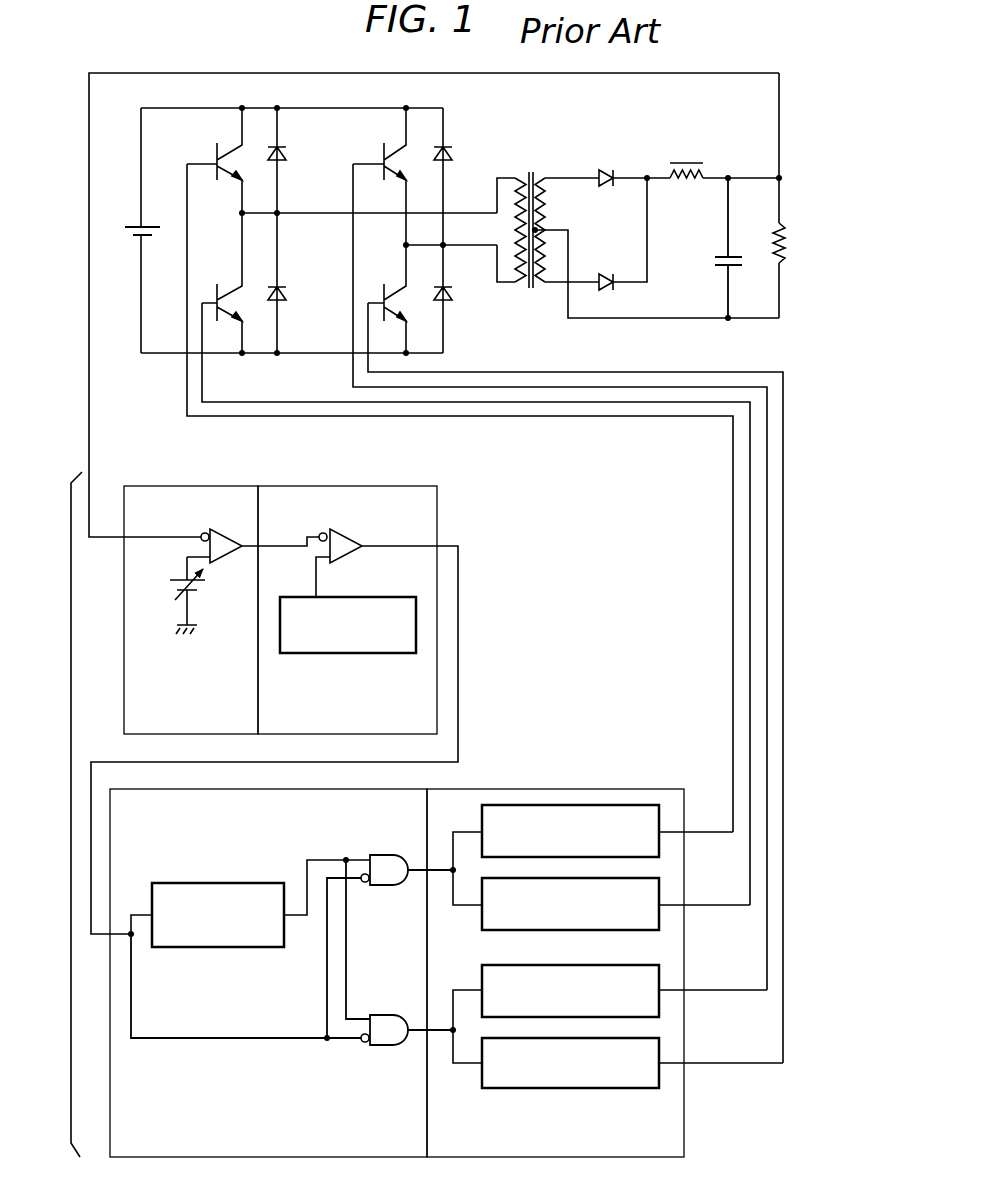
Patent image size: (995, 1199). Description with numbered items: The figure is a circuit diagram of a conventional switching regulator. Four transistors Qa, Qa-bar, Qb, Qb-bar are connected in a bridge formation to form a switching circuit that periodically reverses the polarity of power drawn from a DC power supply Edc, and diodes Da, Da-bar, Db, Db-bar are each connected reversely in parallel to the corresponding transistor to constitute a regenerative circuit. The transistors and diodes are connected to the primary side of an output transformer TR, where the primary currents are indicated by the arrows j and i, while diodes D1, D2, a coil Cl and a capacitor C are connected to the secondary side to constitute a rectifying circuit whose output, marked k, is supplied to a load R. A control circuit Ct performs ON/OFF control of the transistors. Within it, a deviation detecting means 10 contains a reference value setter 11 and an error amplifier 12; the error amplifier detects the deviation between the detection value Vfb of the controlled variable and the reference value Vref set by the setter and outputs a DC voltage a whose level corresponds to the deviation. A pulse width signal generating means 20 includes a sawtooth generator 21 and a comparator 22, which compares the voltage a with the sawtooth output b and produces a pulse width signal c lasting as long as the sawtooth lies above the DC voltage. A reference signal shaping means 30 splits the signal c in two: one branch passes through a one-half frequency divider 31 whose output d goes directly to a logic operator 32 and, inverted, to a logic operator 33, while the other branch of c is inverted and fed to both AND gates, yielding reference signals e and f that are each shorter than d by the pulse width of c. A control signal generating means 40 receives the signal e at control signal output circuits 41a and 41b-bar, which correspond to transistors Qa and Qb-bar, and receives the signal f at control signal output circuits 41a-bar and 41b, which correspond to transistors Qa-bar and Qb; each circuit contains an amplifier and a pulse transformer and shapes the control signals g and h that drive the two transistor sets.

The DC power supply Edc is at (130, 217).
The transistor Qa is at (210, 160).
The transistor Qa-bar is at (222, 285).
The transistor Qb is at (380, 160).
The transistor Qb-bar is at (386, 285).
The diode Da is at (285, 152).
The diode Da-bar is at (285, 292).
The diode Db is at (452, 150).
The diode Db-bar is at (452, 297).
The output transformer TR is at (534, 175).
The primary current j is at (486, 203).
The primary current i is at (473, 226).
The diode D1 is at (606, 190).
The diode D2 is at (606, 272).
The coil Cl is at (696, 182).
The output voltage k is at (660, 196).
The capacitor C is at (712, 266).
The load R is at (776, 232).
The deviation detecting means 10 is at (192, 485).
The reference value setter 11 is at (195, 597).
The error amplifier 12 is at (225, 563).
The detection value Vfb is at (176, 532).
The reference value Vref is at (180, 567).
The DC voltage a is at (277, 540).
The output of sawtooth generator b is at (320, 575).
The pulse width signal generating means 20 is at (338, 485).
The sawtooth generator 21 is at (389, 597).
The comparator 22 is at (344, 530).
The reference signal shaping means 30 is at (232, 790).
The ½ frequency divider 31 is at (259, 883).
The logic operator 32 is at (385, 887).
The logic operator 33 is at (385, 1014).
The pulse width signal c is at (135, 941).
The output of frequency divider d is at (320, 855).
The reference signal e is at (416, 860).
The reference signal f is at (416, 1038).
The control signal generating means 40 is at (566, 789).
The control signal output circuit 41a is at (482, 822).
The control signal output circuit 41b-bar is at (482, 925).
The control signal output circuit 41a-bar is at (482, 970).
The control signal output circuit 41b is at (650, 1089).
The control signal g is at (677, 836).
The control signal h is at (677, 994).
The control circuit Ct is at (62, 814).